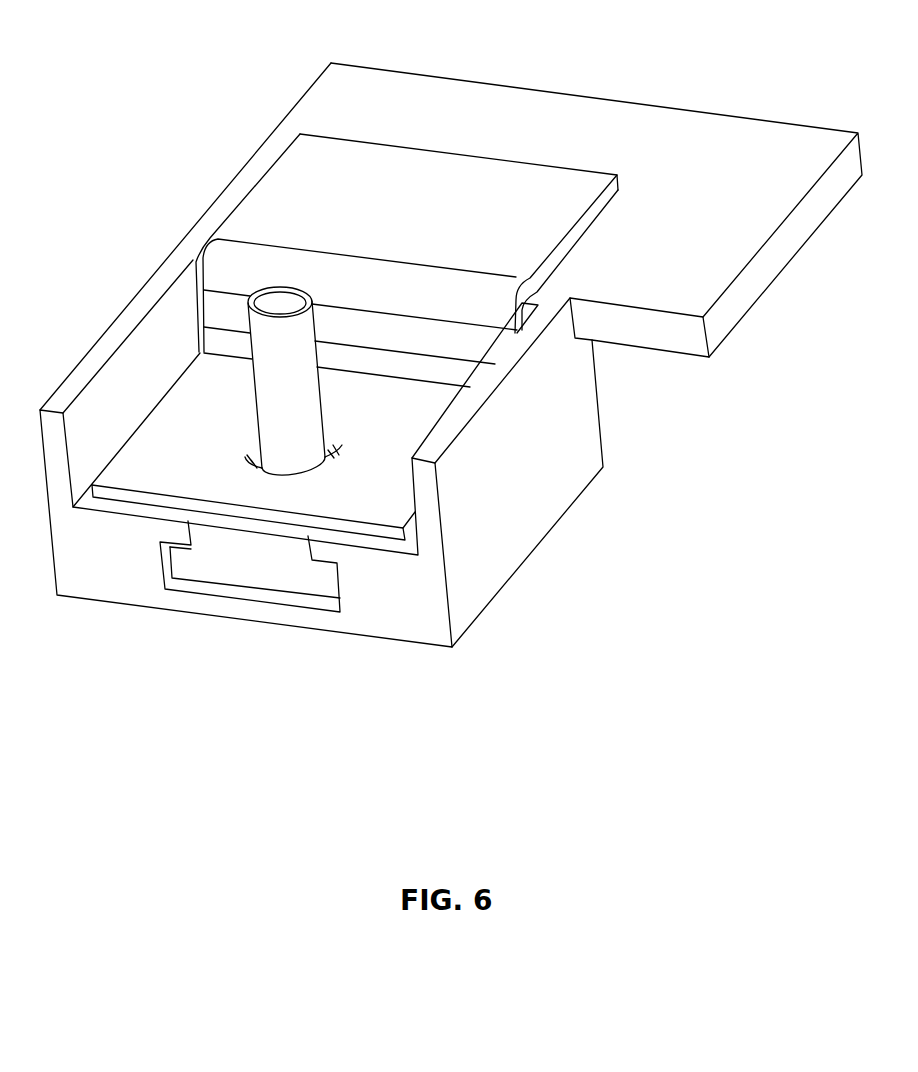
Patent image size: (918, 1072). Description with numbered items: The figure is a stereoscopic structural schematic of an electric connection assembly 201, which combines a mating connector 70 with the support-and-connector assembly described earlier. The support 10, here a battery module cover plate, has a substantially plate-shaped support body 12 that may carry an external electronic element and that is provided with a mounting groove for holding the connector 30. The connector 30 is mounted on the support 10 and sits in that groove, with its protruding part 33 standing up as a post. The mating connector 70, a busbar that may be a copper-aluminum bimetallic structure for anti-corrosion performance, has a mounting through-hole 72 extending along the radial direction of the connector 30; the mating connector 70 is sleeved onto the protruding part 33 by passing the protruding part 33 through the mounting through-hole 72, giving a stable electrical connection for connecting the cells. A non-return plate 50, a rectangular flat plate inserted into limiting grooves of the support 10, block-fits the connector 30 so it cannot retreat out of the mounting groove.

The electric connection assembly 201 is at (509, 60).
The support 10 is at (115, 312).
The mating connector 70 is at (203, 390).
The mounting through-hole 72 is at (248, 447).
The connector 30 is at (322, 417).
The protruding part 33 is at (307, 358).
The support body 12 is at (460, 517).
The non-return plate 50 is at (240, 570).